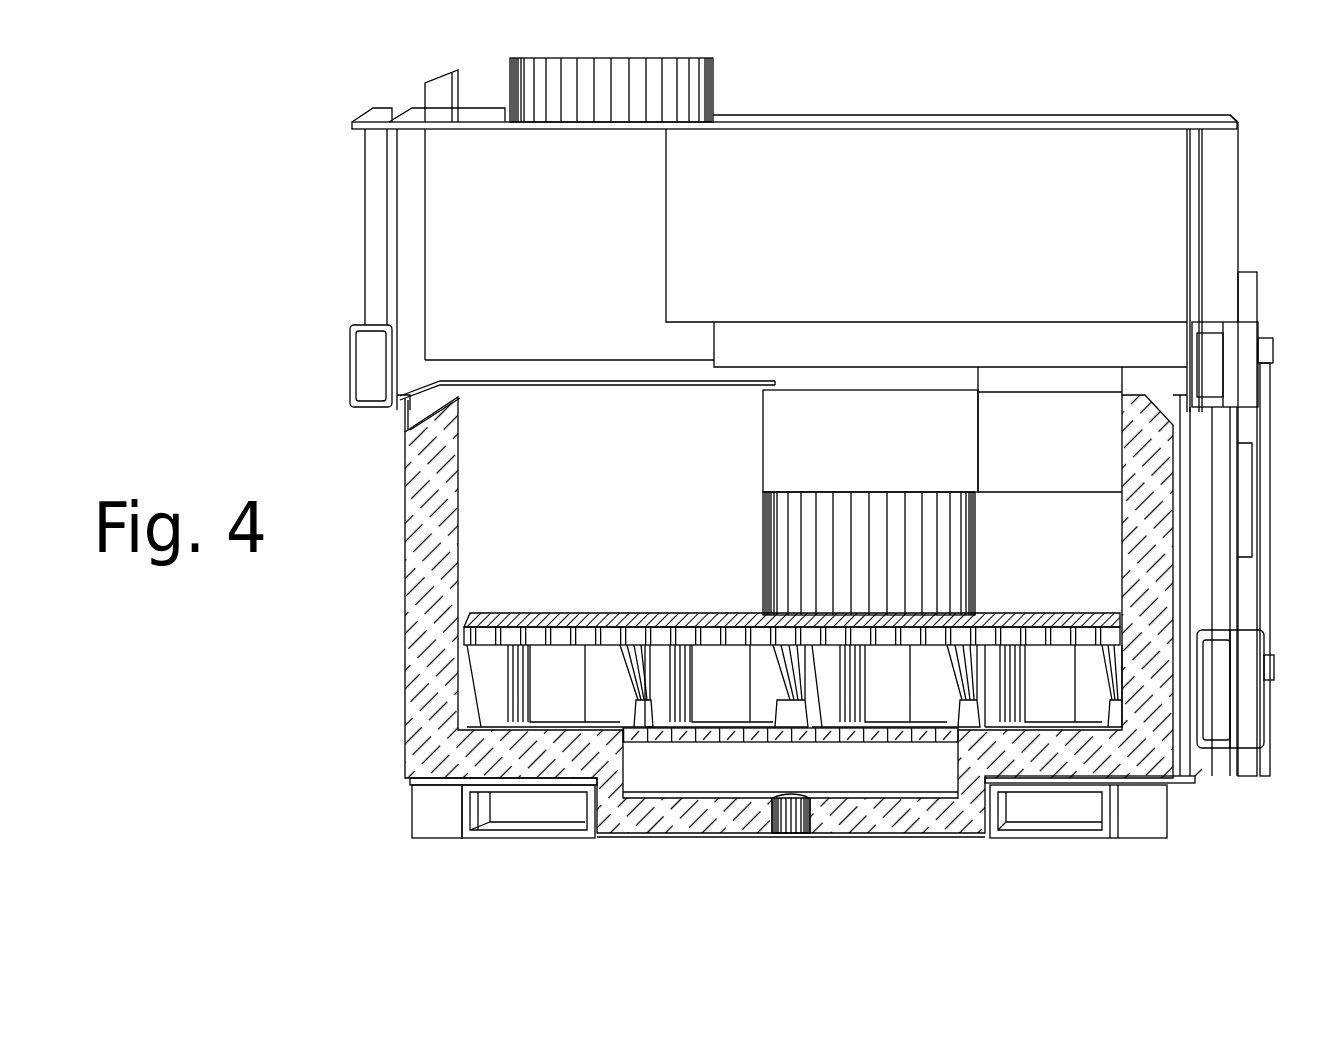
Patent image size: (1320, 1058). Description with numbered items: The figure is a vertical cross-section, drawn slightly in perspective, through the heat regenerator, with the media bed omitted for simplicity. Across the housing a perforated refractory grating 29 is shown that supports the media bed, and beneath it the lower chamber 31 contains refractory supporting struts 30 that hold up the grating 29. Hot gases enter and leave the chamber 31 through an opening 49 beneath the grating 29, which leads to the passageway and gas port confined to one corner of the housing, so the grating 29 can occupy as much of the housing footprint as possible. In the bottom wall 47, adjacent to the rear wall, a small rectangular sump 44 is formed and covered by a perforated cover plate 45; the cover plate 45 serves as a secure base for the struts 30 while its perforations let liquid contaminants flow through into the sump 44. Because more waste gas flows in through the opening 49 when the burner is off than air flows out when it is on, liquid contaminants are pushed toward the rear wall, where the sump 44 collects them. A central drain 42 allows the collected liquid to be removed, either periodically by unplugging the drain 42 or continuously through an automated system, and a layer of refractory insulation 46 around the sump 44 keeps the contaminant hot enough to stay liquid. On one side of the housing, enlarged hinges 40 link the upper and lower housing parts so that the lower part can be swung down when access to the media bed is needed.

The perforated refractory grating 29 is at (653, 618).
The refractory supporting struts 30 is at (597, 706).
The lower chamber 31 is at (1067, 692).
The hinges 40 is at (1265, 578).
The drain hole 42 is at (783, 833).
The sump 44 is at (810, 776).
The perforated cover plate 45 is at (672, 737).
The refractory insulation 46 is at (728, 813).
The bottom wall 47 is at (558, 770).
The opening 49 is at (907, 692).